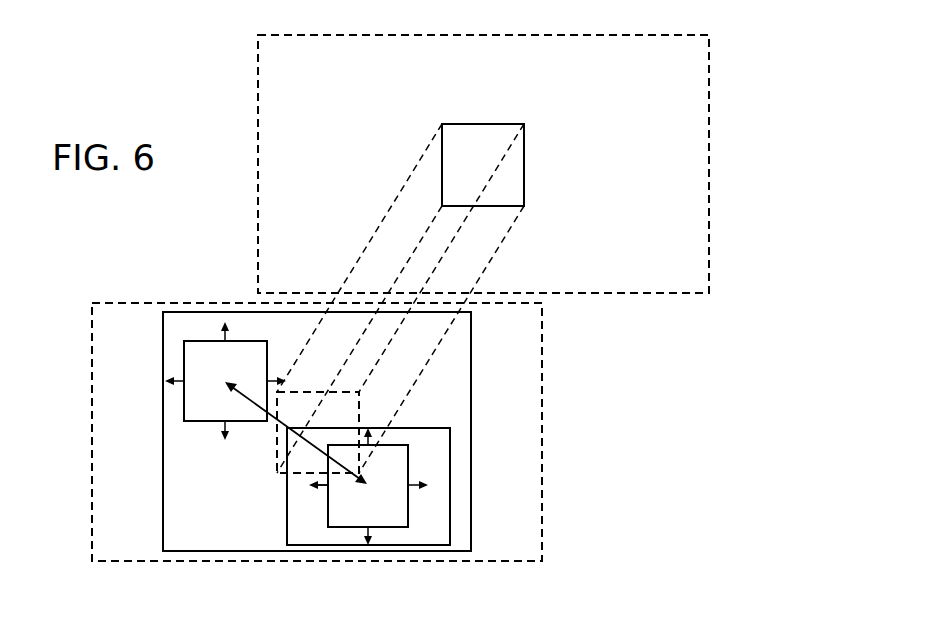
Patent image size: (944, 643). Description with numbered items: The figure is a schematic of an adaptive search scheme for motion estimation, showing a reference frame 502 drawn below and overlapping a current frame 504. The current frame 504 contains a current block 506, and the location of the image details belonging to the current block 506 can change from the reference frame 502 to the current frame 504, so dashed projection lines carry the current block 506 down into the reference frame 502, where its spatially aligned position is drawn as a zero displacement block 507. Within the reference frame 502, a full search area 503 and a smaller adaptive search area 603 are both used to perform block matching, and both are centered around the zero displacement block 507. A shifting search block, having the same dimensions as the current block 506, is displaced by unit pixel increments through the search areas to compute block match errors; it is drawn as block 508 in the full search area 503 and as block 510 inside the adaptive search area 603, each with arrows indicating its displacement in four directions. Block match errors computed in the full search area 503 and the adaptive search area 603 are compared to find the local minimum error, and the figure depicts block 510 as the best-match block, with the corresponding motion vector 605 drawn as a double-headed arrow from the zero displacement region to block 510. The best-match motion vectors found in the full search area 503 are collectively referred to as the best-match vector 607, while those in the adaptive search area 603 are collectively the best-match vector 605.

The reference frame 502 is at (543, 535).
The full search area 503 is at (471, 440).
The current frame 504 is at (710, 268).
The current block 506 is at (524, 177).
The zero displacement block 507 is at (301, 477).
The shifting search block 508 is at (199, 421).
The best-match block 510 is at (393, 527).
The adaptive search area 603 is at (450, 490).
The motion vector 605 is at (345, 462).
The best-match vector 607 is at (279, 425).